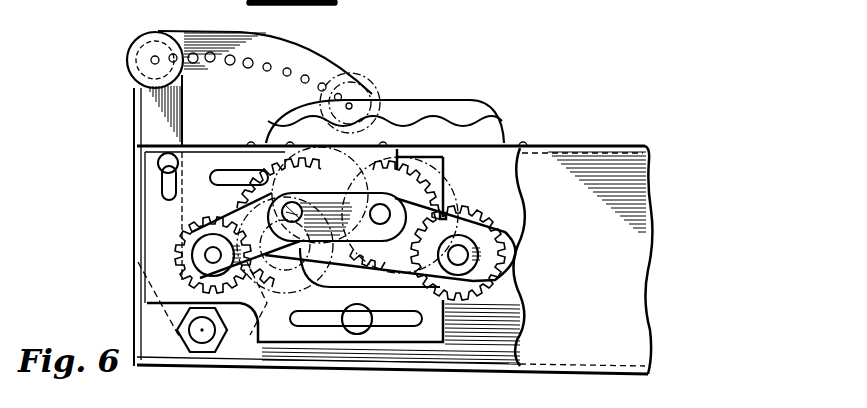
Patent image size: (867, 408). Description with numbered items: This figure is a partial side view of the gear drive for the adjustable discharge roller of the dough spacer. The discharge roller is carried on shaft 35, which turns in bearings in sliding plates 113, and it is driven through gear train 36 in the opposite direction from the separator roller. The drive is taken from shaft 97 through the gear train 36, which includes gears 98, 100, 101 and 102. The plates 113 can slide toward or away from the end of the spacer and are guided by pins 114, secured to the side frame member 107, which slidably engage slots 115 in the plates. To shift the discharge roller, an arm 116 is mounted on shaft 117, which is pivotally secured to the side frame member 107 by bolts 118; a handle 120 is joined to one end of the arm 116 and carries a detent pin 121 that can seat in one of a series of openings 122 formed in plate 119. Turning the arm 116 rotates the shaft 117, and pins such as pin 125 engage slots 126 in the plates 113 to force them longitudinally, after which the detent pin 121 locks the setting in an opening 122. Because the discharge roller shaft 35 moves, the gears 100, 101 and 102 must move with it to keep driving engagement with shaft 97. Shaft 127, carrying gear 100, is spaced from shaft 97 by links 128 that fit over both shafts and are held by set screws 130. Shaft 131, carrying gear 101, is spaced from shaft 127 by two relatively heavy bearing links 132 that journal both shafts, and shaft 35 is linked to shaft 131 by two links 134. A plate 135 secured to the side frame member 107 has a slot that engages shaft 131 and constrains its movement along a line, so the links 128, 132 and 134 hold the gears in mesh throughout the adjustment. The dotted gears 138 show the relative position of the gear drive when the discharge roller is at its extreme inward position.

The shaft 35 is at (190, 283).
The gear train 36 is at (515, 223).
The shaft 97 is at (486, 287).
The gear 98 is at (462, 262).
The gear 100 is at (452, 195).
The gear 101 is at (281, 171).
The gear 102 is at (178, 253).
The side frame member 107 is at (143, 184).
The plate 113 is at (157, 222).
The pin 114 is at (357, 322).
The slot 115 is at (407, 323).
The arm 116 is at (142, 117).
The shaft 117 is at (201, 343).
The bolt 118 is at (185, 335).
The plate 119 is at (300, 60).
The handle 120 is at (160, 35).
The detent pin 121 is at (150, 61).
The opening 122 is at (247, 64).
The pin 125 is at (158, 163).
The slot 126 is at (162, 189).
The shaft 127 is at (392, 226).
The link 128 is at (420, 263).
The set screw 130 is at (500, 247).
The shaft 131 is at (284, 219).
The bearing link 132 is at (317, 215).
The link 134 is at (263, 265).
The plate 135 is at (398, 165).
The dotted gears 138 is at (463, 127).